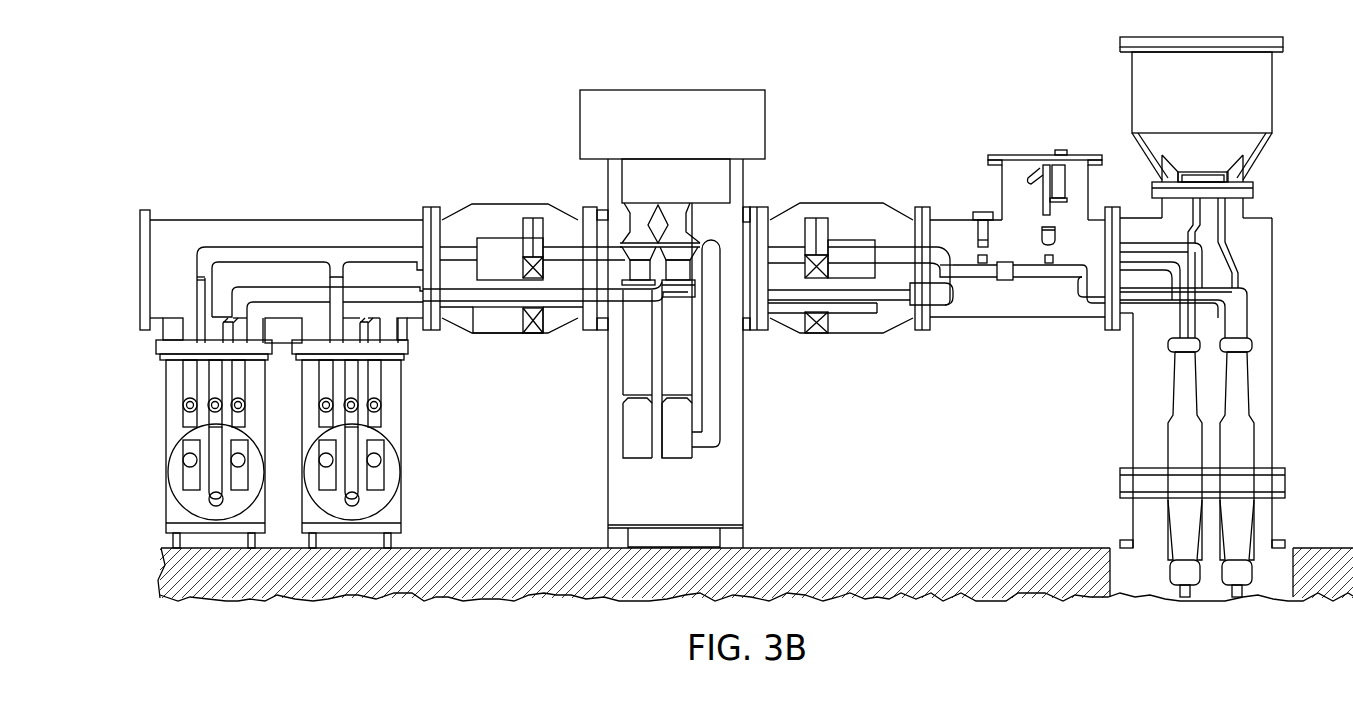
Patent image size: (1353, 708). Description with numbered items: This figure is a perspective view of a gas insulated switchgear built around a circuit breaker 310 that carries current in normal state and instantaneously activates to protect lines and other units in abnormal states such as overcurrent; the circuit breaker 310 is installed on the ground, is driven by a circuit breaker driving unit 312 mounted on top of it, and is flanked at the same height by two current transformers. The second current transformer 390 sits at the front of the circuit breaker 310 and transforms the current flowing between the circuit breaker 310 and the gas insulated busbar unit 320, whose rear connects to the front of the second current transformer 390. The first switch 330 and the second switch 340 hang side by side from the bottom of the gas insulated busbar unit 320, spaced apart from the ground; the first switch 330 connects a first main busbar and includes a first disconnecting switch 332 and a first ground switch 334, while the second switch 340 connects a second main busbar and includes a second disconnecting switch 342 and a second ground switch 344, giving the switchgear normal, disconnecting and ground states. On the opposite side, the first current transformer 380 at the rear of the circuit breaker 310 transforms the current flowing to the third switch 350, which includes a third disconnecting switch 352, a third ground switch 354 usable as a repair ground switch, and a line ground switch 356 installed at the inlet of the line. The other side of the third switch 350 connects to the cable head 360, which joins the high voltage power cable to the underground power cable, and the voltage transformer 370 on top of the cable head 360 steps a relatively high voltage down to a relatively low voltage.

The circuit breaker 310 is at (745, 482).
The circuit breaker driving unit 312 is at (670, 97).
The gas insulated busbar unit 320 is at (278, 228).
The first switch 330 is at (184, 444).
The first disconnecting switch 332 is at (180, 461).
The first ground switch 334 is at (182, 407).
The second switch 340 is at (383, 444).
The second disconnecting switch 342 is at (396, 466).
The second ground switch 344 is at (394, 410).
The third switch 350 is at (1066, 319).
The third disconnecting switch 352 is at (973, 278).
The third ground switch 354 is at (979, 212).
The line ground switch 356 is at (1045, 164).
The cable head 360 is at (1274, 370).
The voltage transformer 370 is at (1267, 105).
The first current transformer 380 is at (840, 210).
The second current transformer 390 is at (493, 216).